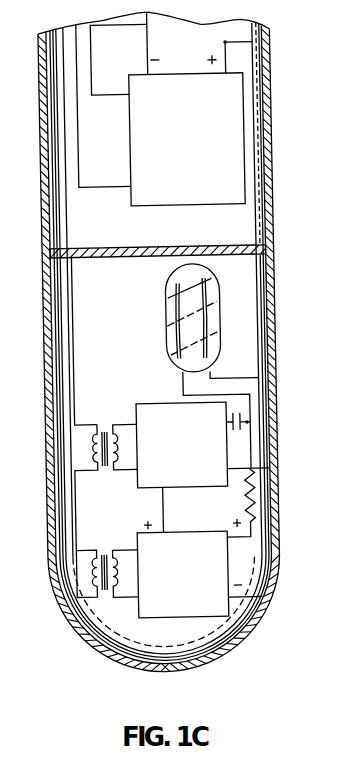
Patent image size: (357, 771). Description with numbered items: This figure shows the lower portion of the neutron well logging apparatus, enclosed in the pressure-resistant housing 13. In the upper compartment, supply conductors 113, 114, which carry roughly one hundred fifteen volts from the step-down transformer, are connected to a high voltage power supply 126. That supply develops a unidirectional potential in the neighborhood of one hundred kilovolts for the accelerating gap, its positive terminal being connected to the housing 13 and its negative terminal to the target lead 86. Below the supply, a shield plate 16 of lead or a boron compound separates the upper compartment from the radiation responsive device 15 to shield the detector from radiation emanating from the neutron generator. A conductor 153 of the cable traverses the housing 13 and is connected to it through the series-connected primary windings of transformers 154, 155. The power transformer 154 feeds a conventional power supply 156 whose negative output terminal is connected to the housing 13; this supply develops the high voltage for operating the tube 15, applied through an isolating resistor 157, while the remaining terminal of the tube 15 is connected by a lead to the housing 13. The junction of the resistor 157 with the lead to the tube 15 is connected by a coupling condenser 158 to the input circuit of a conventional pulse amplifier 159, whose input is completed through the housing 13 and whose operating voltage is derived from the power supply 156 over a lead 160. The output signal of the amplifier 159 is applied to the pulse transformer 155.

The pressure-resistant housing 13 is at (276, 288).
The shield plate 16 is at (154, 247).
The high voltage power supply 126 is at (216, 208).
The target lead 86 is at (152, 28).
The supply conductor 114 is at (117, 96).
The supply conductor 113 is at (121, 184).
The conductor 153 is at (74, 276).
The radiation responsive device 15 is at (169, 298).
The pulse amplifier 159 is at (169, 402).
The pulse transformer 155 is at (104, 424).
The coupling condenser 158 is at (234, 430).
The isolating resistor 157 is at (244, 512).
The lead 160 is at (160, 523).
The power supply 156 is at (197, 619).
The power transformer 154 is at (101, 549).